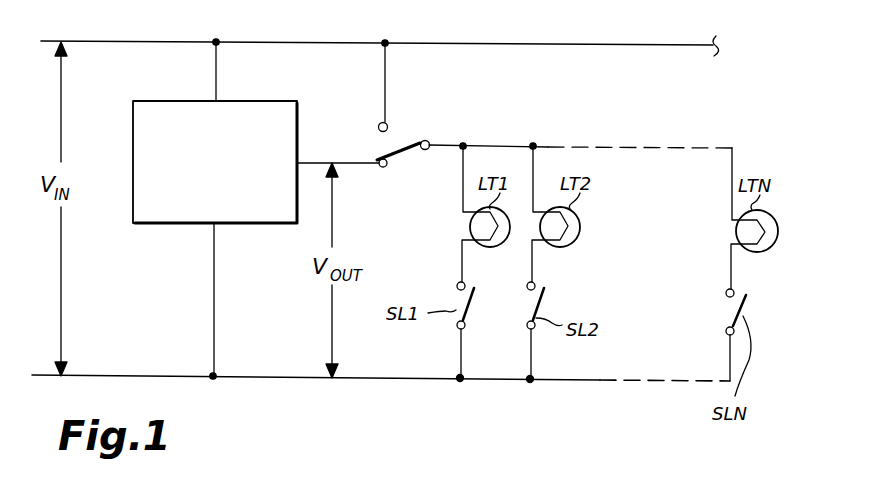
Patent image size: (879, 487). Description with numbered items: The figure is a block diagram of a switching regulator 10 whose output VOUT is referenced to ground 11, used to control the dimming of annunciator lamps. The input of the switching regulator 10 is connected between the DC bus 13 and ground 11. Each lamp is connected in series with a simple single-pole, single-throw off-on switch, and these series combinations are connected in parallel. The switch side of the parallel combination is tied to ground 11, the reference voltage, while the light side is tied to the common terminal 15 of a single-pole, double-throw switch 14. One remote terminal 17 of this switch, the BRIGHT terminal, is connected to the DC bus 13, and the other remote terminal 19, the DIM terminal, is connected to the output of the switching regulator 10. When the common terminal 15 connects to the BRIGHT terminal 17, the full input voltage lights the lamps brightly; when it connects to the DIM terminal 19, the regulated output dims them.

The switching regulator 10 is at (260, 209).
The ground 11 is at (413, 382).
The DC bus 13 is at (272, 40).
The single-pole, double-throw switch 14 is at (411, 132).
The common terminal 15 is at (430, 143).
The BRIGHT remote terminal 17 is at (388, 122).
The DIM remote terminal 19 is at (382, 168).